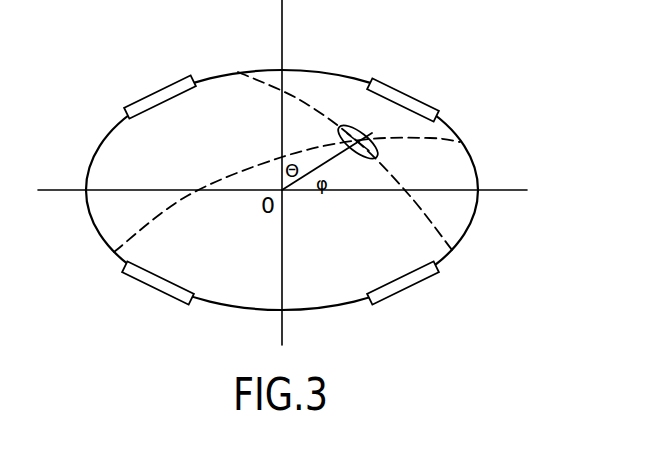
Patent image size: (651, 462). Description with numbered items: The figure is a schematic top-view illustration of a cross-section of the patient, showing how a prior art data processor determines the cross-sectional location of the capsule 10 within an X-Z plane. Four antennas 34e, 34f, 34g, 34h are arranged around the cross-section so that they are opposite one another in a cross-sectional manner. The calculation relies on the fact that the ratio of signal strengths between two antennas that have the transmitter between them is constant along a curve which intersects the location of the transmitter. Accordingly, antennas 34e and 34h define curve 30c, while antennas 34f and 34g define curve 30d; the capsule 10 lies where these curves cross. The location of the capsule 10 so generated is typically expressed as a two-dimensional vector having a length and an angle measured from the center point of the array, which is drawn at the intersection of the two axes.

The capsule 10 is at (357, 131).
The curve 30c is at (440, 229).
The curve 30d is at (433, 142).
The antenna 34e is at (408, 90).
The antenna 34f is at (406, 291).
The antenna 34g is at (155, 90).
The antenna 34h is at (155, 291).